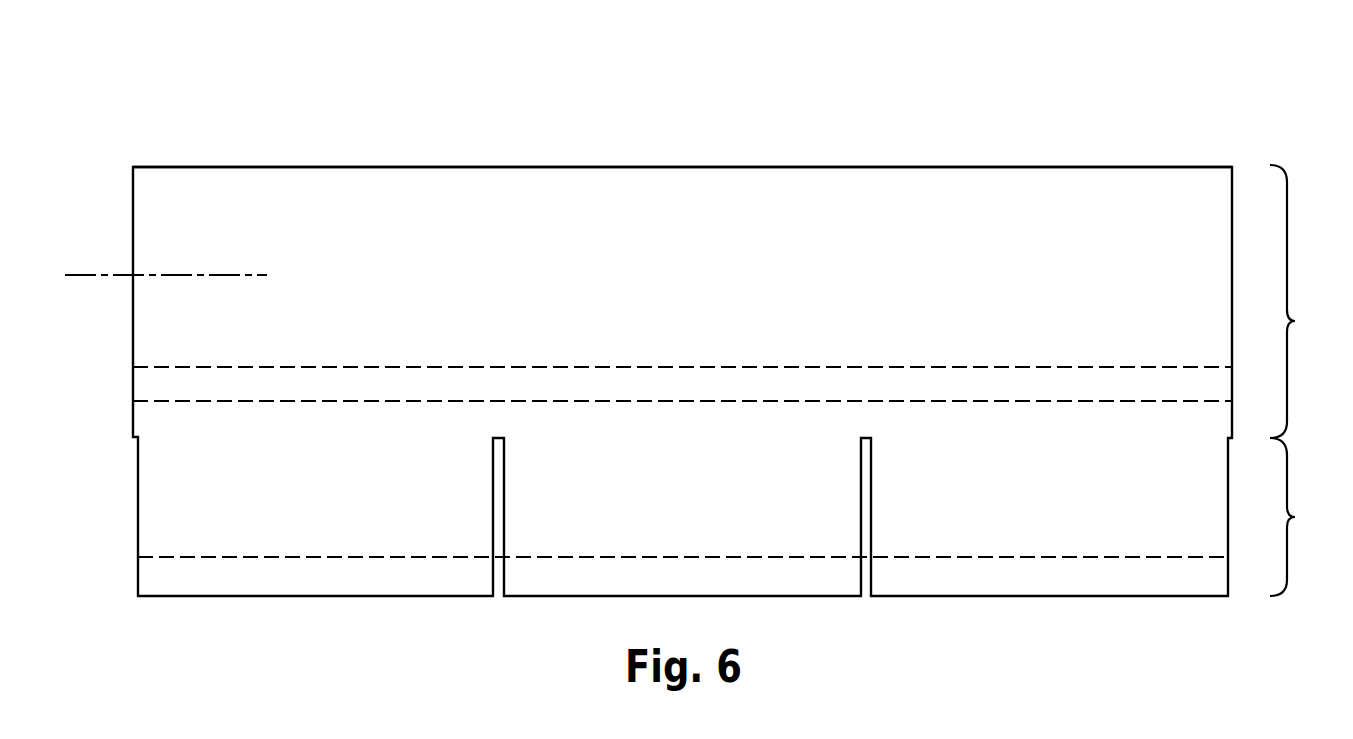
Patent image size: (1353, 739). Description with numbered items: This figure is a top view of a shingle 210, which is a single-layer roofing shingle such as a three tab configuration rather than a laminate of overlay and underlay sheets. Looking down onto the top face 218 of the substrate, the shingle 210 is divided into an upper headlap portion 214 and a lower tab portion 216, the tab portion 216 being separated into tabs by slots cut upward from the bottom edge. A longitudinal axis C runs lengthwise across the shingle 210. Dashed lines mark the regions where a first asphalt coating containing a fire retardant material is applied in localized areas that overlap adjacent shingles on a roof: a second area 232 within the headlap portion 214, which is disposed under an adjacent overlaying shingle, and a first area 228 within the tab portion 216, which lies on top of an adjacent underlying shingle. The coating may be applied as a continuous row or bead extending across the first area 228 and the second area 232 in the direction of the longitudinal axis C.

The shingle 210 is at (118, 138).
The top face 218 is at (512, 205).
The second area 232 is at (153, 385).
The first area 228 is at (157, 578).
The headlap portion 214 is at (1308, 301).
The tab portion 216 is at (1308, 517).
The longitudinal axis C is at (162, 261).